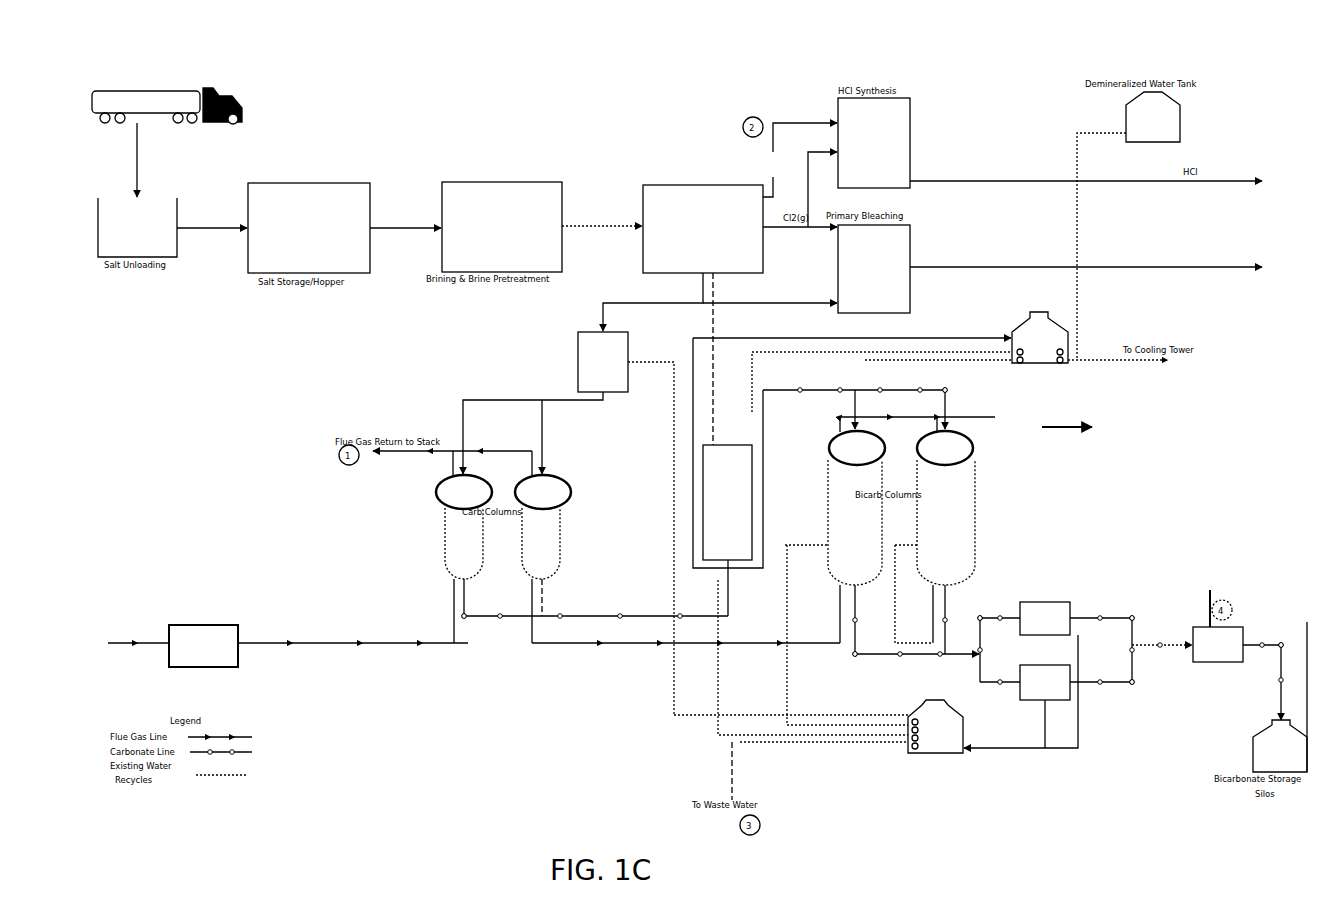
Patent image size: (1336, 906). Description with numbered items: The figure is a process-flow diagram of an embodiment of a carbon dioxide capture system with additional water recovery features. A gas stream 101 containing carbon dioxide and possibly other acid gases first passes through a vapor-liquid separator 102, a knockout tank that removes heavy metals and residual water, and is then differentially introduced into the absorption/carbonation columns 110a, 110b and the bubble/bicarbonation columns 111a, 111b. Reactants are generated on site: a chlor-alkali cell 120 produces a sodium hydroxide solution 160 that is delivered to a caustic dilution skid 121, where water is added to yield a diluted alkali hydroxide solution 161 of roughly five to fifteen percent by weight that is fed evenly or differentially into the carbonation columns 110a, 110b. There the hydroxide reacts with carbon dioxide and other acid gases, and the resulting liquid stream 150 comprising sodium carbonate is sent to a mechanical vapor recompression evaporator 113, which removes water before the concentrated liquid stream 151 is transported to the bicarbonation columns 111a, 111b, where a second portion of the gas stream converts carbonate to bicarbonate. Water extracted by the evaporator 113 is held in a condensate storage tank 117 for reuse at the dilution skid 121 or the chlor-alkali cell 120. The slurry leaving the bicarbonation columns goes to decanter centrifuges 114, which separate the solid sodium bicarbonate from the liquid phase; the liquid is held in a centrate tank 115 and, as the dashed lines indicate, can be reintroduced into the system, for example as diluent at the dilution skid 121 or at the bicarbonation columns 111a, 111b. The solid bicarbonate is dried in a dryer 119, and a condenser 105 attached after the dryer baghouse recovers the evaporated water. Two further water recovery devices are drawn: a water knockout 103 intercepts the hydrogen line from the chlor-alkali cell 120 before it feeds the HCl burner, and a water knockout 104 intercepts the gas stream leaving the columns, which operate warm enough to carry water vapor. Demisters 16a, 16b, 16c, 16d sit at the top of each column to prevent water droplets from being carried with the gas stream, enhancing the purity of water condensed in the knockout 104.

The gas stream 101 is at (115, 635).
The vapor-liquid separator 102 is at (181, 655).
The water knockout 103 is at (793, 153).
The water knockout 104 is at (1030, 421).
The condenser 105 is at (1213, 596).
The absorption/carbonation column 110a is at (464, 575).
The absorption/carbonation column 110b is at (541, 575).
The bubble/bicarbonation column 111a is at (855, 522).
The bubble/bicarbonation column 111b is at (946, 522).
The mechanical vapor recompression evaporator 113 is at (727, 524).
The decanter centrifuges 114 is at (1078, 675).
The centrate tank 115 is at (931, 721).
The condensate storage tank 117 is at (1023, 348).
The dryer 119 is at (1212, 658).
The chlor-alkali cell 120 is at (703, 229).
The caustic dilution skid 121 is at (551, 362).
The liquid stream 150 is at (617, 613).
The concentrated liquid stream 151 is at (811, 386).
The sodium hydroxide solution 160 is at (636, 300).
The alkali hydroxide solution 161 is at (578, 399).
The demister 16a is at (857, 448).
The demister 16b is at (945, 448).
The demister 16c is at (464, 492).
The demister 16d is at (543, 492).